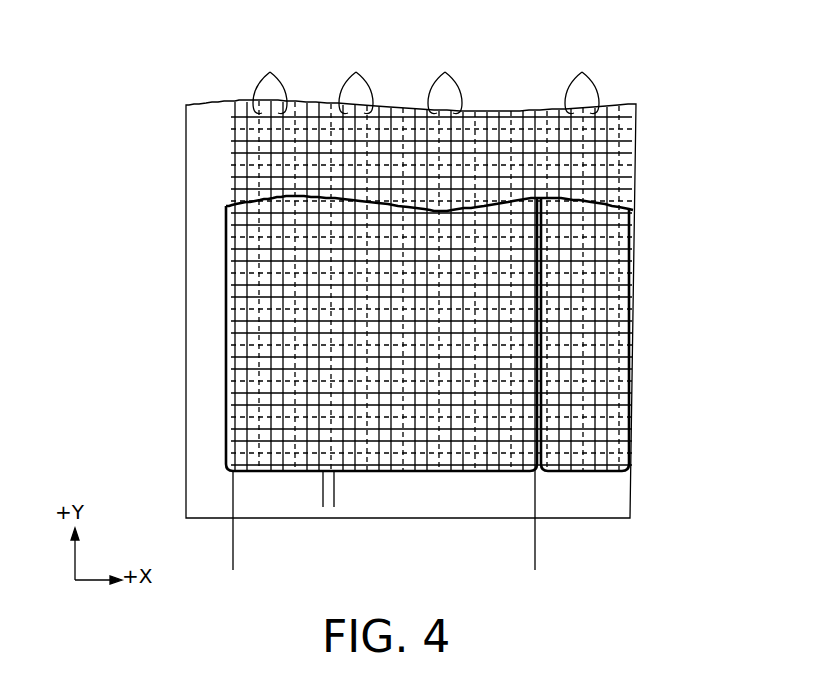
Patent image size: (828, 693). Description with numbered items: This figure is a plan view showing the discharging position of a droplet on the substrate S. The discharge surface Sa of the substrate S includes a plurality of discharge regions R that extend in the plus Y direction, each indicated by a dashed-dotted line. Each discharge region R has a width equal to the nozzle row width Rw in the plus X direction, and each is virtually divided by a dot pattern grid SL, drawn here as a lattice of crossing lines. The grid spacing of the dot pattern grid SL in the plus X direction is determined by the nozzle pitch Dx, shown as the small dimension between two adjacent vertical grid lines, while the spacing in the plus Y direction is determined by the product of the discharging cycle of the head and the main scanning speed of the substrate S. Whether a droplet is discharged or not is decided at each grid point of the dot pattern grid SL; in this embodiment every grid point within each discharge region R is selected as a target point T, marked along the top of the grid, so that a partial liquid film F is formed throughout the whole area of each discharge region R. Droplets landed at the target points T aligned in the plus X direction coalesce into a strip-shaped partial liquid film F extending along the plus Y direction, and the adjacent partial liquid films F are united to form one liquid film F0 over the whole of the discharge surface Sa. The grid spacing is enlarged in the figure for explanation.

The substrate S is at (186, 150).
The discharge surface Sa is at (186, 199).
The dot pattern grid SL is at (207, 292).
The liquid film F0 is at (226, 395).
The target point T is at (426, 83).
The partial liquid film F is at (281, 473).
The discharge region R is at (395, 474).
The nozzle pitch Dx is at (297, 490).
The nozzle row width Rw is at (535, 545).